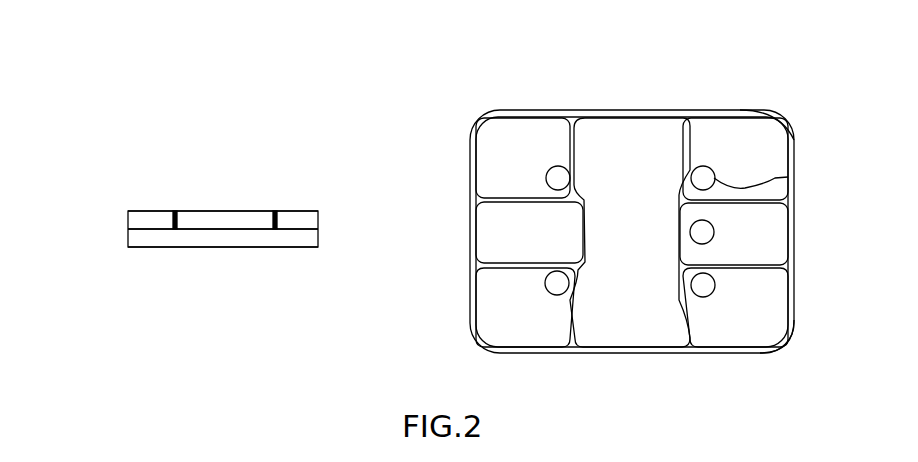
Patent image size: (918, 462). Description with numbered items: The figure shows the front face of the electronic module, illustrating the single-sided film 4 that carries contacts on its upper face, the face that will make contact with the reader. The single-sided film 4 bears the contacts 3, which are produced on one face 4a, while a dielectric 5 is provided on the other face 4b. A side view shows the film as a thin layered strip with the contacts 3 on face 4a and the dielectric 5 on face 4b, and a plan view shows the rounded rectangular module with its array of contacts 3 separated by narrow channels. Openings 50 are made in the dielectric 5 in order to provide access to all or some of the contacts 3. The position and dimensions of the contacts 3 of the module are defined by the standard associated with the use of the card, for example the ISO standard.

The contacts 3 is at (143, 212).
The single-sided film 4 is at (128, 235).
The face 4a is at (767, 112).
The other face 4b is at (750, 353).
The dielectric 5 is at (318, 238).
The openings 50 is at (790, 177).